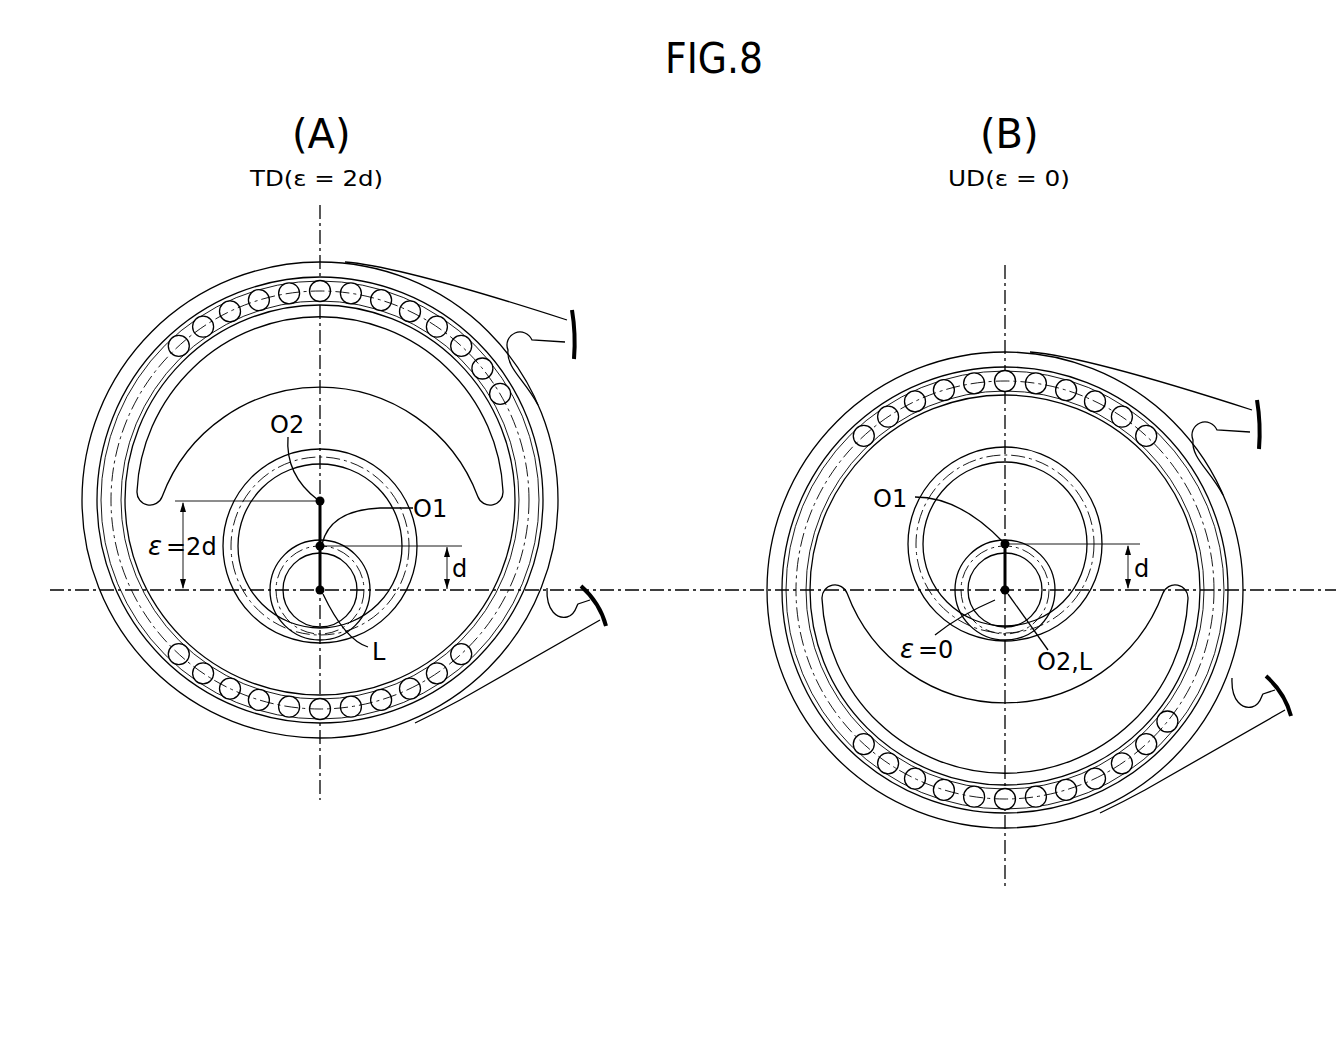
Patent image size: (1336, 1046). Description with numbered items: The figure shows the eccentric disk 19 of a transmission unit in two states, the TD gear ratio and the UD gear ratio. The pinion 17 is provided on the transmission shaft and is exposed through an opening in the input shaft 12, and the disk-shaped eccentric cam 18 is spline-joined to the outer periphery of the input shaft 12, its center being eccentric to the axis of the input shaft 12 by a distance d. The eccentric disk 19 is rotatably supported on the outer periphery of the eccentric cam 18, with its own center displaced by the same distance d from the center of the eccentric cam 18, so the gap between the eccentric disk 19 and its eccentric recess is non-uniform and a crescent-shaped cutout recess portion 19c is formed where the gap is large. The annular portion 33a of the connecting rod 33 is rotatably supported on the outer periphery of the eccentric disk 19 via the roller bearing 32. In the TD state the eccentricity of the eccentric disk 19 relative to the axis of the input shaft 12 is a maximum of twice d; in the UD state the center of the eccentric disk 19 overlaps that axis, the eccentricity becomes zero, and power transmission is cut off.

The annular portion 33a is at (232, 283).
The connecting rod 33 is at (490, 284).
The roller bearing 32 is at (383, 294).
The eccentric disk 19 is at (525, 491).
The crescent-shaped cutout recess portion 19c is at (242, 404).
The eccentric cam 18 is at (287, 543).
The input shaft 12 is at (272, 572).
The pinion 17 is at (306, 612).